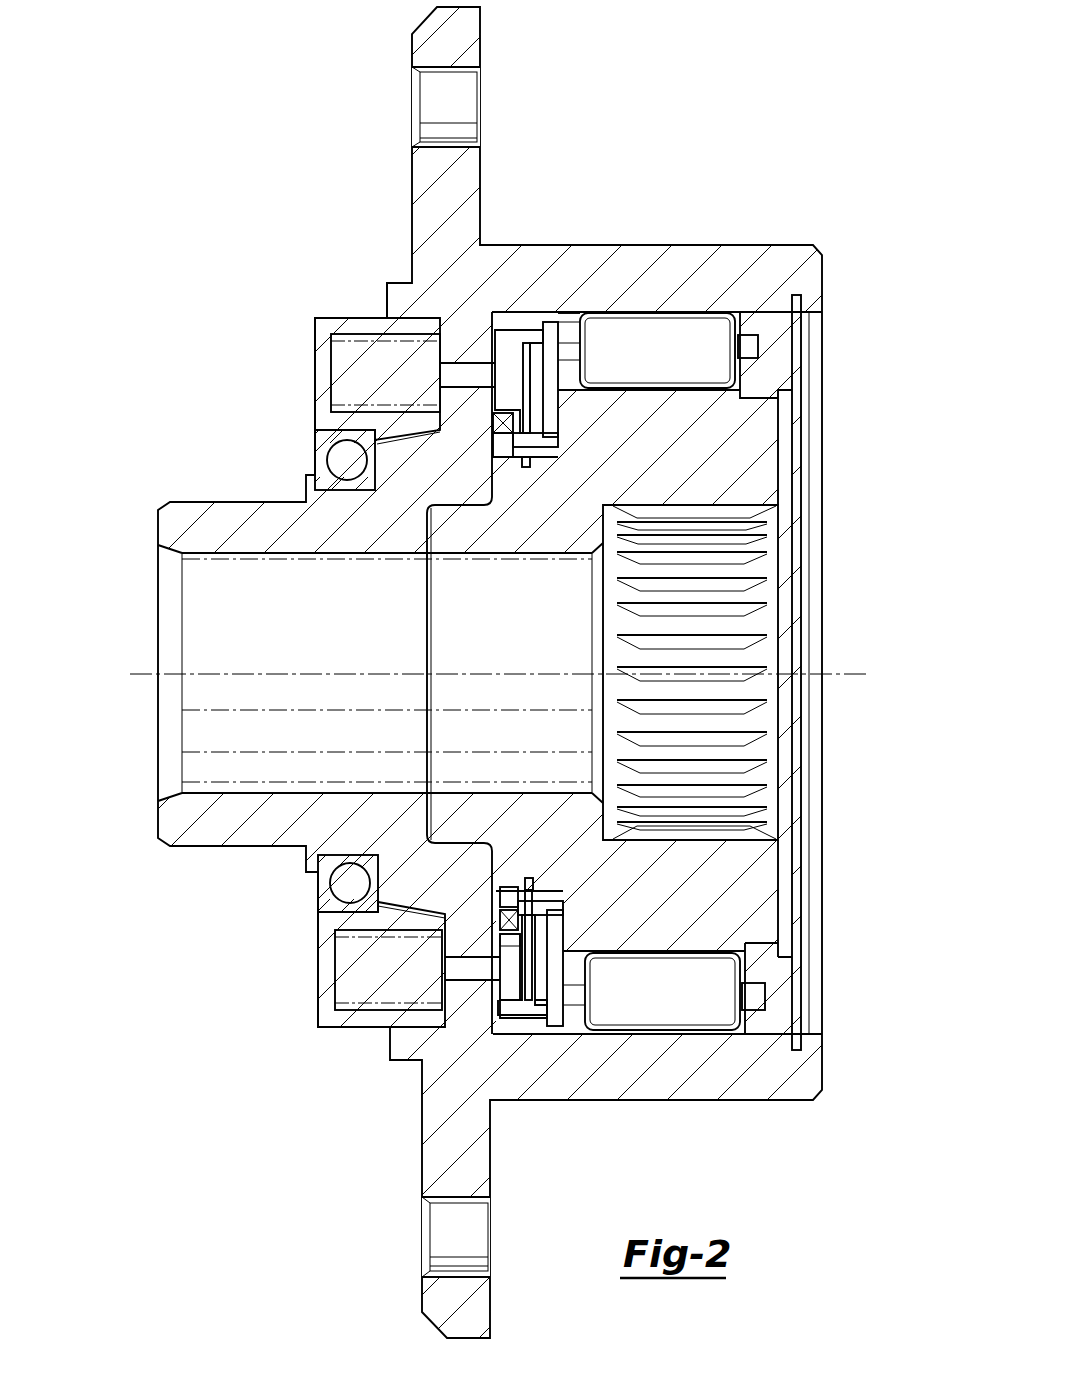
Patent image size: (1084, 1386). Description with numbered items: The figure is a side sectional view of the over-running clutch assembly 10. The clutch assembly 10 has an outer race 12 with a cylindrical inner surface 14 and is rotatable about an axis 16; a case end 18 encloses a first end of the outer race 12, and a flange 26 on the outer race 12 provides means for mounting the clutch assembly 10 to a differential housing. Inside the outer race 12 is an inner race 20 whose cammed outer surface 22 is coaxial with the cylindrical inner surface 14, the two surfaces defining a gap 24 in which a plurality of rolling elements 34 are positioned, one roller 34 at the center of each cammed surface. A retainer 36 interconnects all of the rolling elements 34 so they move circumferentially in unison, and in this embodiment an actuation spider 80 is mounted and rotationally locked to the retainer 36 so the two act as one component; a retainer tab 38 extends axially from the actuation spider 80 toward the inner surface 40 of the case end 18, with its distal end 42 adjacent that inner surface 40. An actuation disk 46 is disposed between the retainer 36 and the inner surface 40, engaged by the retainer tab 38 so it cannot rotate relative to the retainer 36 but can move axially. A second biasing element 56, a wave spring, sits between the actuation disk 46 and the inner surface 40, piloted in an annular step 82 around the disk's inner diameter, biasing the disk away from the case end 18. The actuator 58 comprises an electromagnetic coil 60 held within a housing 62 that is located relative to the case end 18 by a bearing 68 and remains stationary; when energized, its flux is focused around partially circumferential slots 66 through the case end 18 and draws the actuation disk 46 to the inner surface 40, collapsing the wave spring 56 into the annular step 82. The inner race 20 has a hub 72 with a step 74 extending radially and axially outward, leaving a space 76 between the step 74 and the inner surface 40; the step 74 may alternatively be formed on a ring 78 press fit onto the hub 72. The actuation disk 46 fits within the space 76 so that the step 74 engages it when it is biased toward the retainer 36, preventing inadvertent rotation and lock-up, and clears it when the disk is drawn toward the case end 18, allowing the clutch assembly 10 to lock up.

The over-running clutch assembly 10 is at (330, 1146).
The outer race 12 is at (800, 283).
The cylindrical inner surface 14 is at (532, 323).
The axis 16 is at (838, 680).
The case end 18 is at (382, 283).
The inner race 20 is at (757, 425).
The cammed outer surface 22 is at (575, 380).
The gap 24 is at (573, 322).
The flange 26 is at (432, 47).
The rolling elements 34 is at (703, 353).
The retainer 36 is at (573, 988).
The retainer tab 38 is at (530, 1012).
The inner surface 40 is at (496, 321).
The distal end 42 is at (497, 1008).
The actuation disk 46 is at (508, 983).
The second biasing element 56 is at (494, 414).
The actuator 58 is at (347, 659).
The electromagnetic coil 60 is at (350, 350).
The housing 62 is at (341, 667).
The slots 66 is at (465, 372).
The bearing 68 is at (337, 460).
The hub 72 is at (507, 885).
The step 74 is at (530, 880).
The space 76 is at (500, 902).
The ring 78 is at (538, 900).
The actuation spider 80 is at (542, 908).
The annular step 82 is at (510, 934).